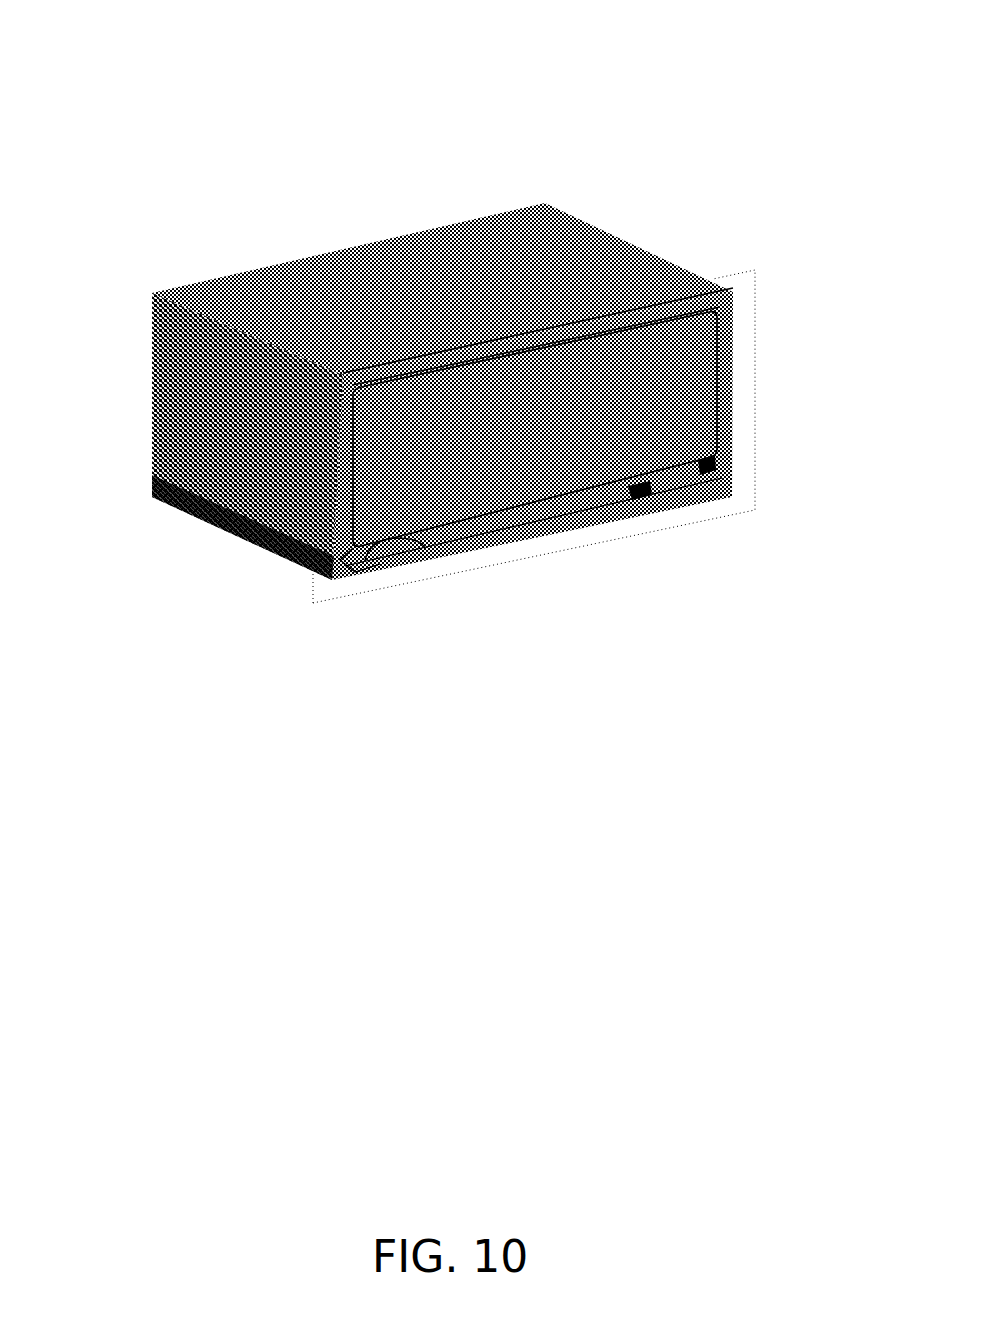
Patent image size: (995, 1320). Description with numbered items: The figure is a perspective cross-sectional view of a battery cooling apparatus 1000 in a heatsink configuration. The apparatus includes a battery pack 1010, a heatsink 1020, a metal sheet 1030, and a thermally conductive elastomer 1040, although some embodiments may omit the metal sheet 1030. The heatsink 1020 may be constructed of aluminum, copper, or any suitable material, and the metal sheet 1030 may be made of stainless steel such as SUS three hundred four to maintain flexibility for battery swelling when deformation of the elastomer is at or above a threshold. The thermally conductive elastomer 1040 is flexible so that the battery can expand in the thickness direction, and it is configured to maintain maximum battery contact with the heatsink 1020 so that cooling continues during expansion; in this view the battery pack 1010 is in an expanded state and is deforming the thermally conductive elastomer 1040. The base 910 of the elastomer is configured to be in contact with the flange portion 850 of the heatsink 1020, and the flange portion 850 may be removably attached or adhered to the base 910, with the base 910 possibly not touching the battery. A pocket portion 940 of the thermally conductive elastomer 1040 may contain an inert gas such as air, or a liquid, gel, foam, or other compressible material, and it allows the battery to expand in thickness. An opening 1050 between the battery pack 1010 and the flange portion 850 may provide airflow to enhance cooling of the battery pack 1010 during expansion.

The battery cooling apparatus 1000 is at (203, 80).
The battery pack 1010 is at (658, 378).
The heatsink 1020 is at (255, 288).
The metal sheet 1030 is at (556, 535).
The thermally conductive elastomer 1040 is at (222, 528).
The flange portion 850 is at (360, 548).
The base 910 is at (373, 560).
The pocket portion 940 is at (602, 516).
The opening 1050 is at (691, 474).